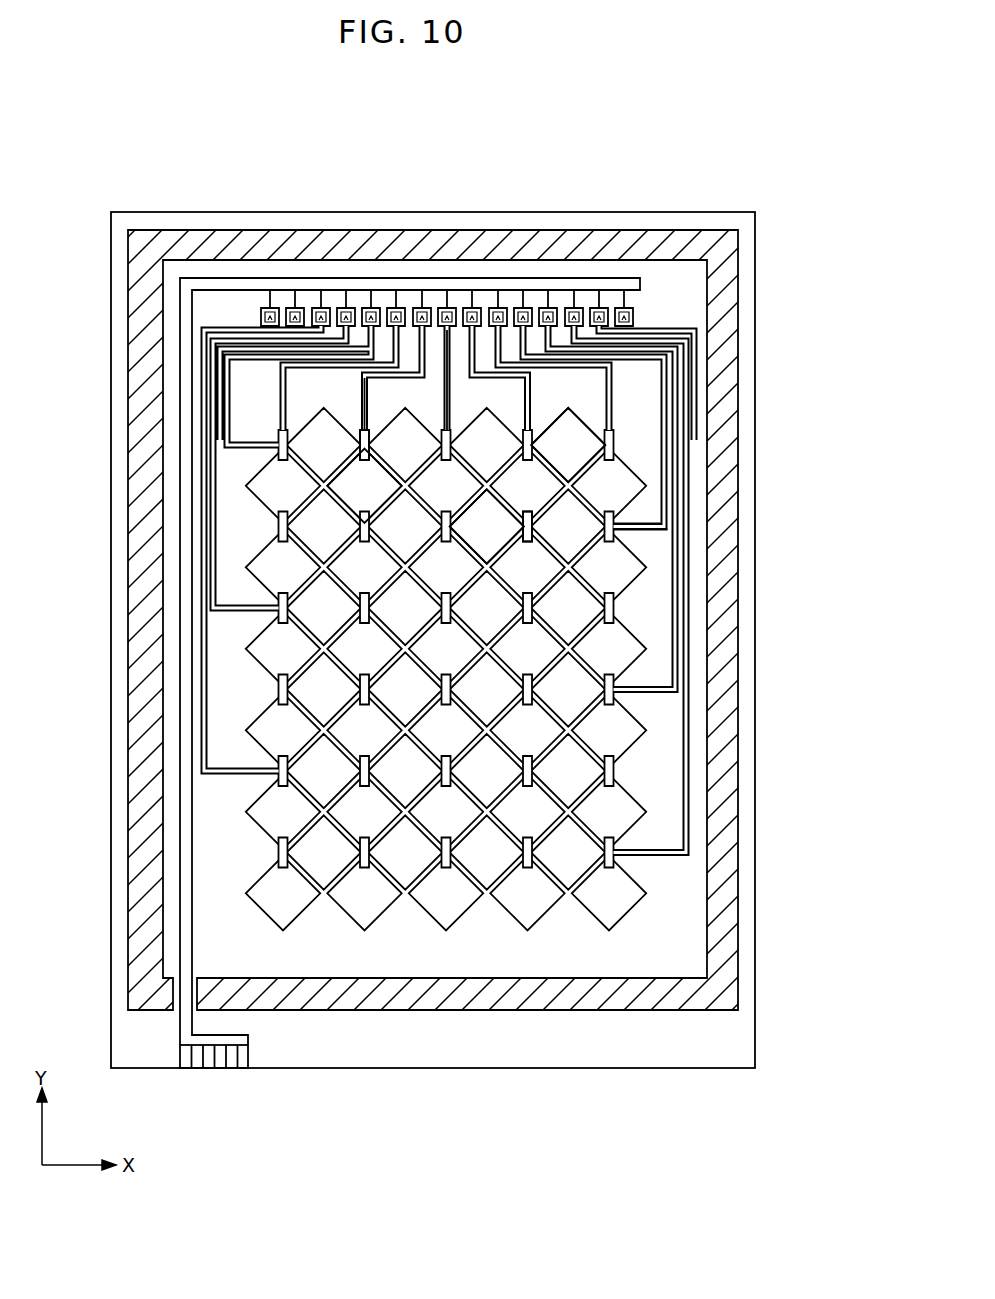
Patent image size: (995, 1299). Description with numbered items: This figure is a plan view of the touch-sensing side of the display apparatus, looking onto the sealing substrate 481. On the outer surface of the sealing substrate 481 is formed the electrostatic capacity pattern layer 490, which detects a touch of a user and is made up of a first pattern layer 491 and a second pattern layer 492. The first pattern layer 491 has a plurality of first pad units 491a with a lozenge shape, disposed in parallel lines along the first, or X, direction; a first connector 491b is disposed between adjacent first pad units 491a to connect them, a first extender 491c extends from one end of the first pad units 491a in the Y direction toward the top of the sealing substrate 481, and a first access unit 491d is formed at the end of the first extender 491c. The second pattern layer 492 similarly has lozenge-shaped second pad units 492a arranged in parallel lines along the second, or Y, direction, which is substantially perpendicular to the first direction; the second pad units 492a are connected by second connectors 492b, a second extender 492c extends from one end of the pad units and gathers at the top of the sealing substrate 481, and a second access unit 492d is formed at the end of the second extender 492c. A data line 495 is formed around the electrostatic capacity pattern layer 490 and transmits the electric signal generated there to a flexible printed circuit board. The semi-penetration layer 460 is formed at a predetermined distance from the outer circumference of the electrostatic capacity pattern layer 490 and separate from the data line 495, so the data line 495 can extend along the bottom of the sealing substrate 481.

The sealing substrate 481 is at (465, 1045).
The semi-penetration layer 460 is at (135, 612).
The data line 495 is at (188, 535).
The electrostatic capacity pattern layer 490 is at (605, 122).
The second pattern layer 492 is at (437, 166).
The first pattern layer 491 is at (705, 166).
The second pad unit 492a is at (357, 480).
The second connector 492b is at (363, 423).
The second extender 492c is at (369, 428).
The second access unit 492d is at (446, 395).
The first pad unit 491a is at (487, 513).
The first access unit 491d is at (578, 483).
The first connector 491b is at (533, 523).
The first extender 491c is at (641, 527).